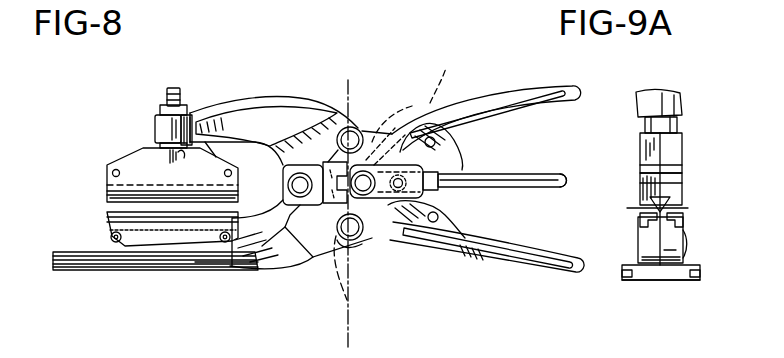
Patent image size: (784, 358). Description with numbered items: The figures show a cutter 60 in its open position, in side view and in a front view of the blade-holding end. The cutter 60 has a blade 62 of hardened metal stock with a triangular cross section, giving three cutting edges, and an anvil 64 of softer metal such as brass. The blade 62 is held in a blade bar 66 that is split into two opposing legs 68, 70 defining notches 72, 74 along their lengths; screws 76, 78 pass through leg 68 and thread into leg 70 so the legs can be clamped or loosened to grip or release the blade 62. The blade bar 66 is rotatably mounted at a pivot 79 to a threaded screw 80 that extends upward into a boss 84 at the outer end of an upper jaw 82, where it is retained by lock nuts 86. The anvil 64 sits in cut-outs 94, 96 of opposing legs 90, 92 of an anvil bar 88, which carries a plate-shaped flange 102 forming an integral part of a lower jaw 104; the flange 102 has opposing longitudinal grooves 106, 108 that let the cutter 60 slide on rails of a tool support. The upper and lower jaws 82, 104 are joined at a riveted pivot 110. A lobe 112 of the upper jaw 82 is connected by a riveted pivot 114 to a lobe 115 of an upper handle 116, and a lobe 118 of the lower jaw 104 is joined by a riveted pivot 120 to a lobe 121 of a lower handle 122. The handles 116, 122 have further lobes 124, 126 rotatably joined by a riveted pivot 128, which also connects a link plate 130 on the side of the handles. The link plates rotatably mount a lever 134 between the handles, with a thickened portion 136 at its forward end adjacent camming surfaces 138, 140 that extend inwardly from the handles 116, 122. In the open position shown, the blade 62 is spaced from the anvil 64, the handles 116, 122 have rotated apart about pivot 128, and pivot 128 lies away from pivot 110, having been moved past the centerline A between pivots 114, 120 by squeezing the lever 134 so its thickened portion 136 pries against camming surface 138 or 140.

In FIG. 8, the cutter 60 is at (137, 108).
In FIG. 8, the blade 62 is at (107, 192).
In FIG. 9A, the blade 62 is at (682, 184).
In FIG. 8, the anvil 64 is at (110, 208).
In FIG. 9A, the anvil 64 is at (685, 232).
In FIG. 8, the blade bar 66 is at (130, 163).
In FIG. 9A, the blade bar 66 is at (683, 147).
In FIG. 9A, the leg 68 is at (640, 145).
In FIG. 9A, the leg 70 is at (688, 163).
In FIG. 9A, the notch 72 is at (640, 185).
In FIG. 9A, the notch 74 is at (684, 203).
In FIG. 8, the screw 76 is at (110, 174).
In FIG. 8, the screw 78 is at (228, 169).
In FIG. 8, the pivot 79 is at (180, 156).
In FIG. 8, the threaded screw 80 is at (175, 88).
In FIG. 9A, the threaded screw 80 is at (659, 111).
In FIG. 8, the upper jaw 82 is at (287, 113).
In FIG. 8, the boss 84 is at (192, 112).
In FIG. 8, the lock nuts 86 is at (162, 112).
In FIG. 8, the anvil bar 88 is at (150, 237).
In FIG. 9A, the anvil bar 88 is at (693, 250).
In FIG. 9A, the leg 90 is at (648, 247).
In FIG. 9A, the leg 92 is at (670, 257).
In FIG. 9A, the cut-out 94 is at (642, 210).
In FIG. 9A, the cut-out 96 is at (683, 218).
In FIG. 8, the flange 102 is at (218, 264).
In FIG. 9A, the flange 102 is at (650, 280).
In FIG. 8, the lower jaw 104 is at (298, 255).
In FIG. 9A, the groove 106 is at (624, 278).
In FIG. 9A, the groove 108 is at (694, 280).
In FIG. 8, the riveted pivot 110 is at (288, 183).
In FIG. 8, the lobe 112 is at (384, 101).
In FIG. 8, the riveted pivot 114 is at (363, 127).
In FIG. 8, the lobe 115 is at (344, 126).
In FIG. 8, the upper handle 116 is at (517, 90).
In FIG. 8, the lobe 118 is at (352, 242).
In FIG. 8, the riveted pivot 120 is at (357, 245).
In FIG. 8, the lobe 121 is at (332, 281).
In FIG. 8, the lower handle 122 is at (480, 258).
In FIG. 8, the lobe 124 is at (450, 77).
In FIG. 8, the lobe 126 is at (437, 202).
In FIG. 8, the riveted pivot 128 is at (287, 208).
In FIG. 8, the link plate 130 is at (438, 163).
In FIG. 8, the lever 134 is at (553, 190).
In FIG. 8, the thickened portion 136 is at (443, 172).
In FIG. 8, the camming surface 138 is at (453, 132).
In FIG. 8, the camming surface 140 is at (463, 228).
In FIG. 8, the centerline A is at (348, 80).